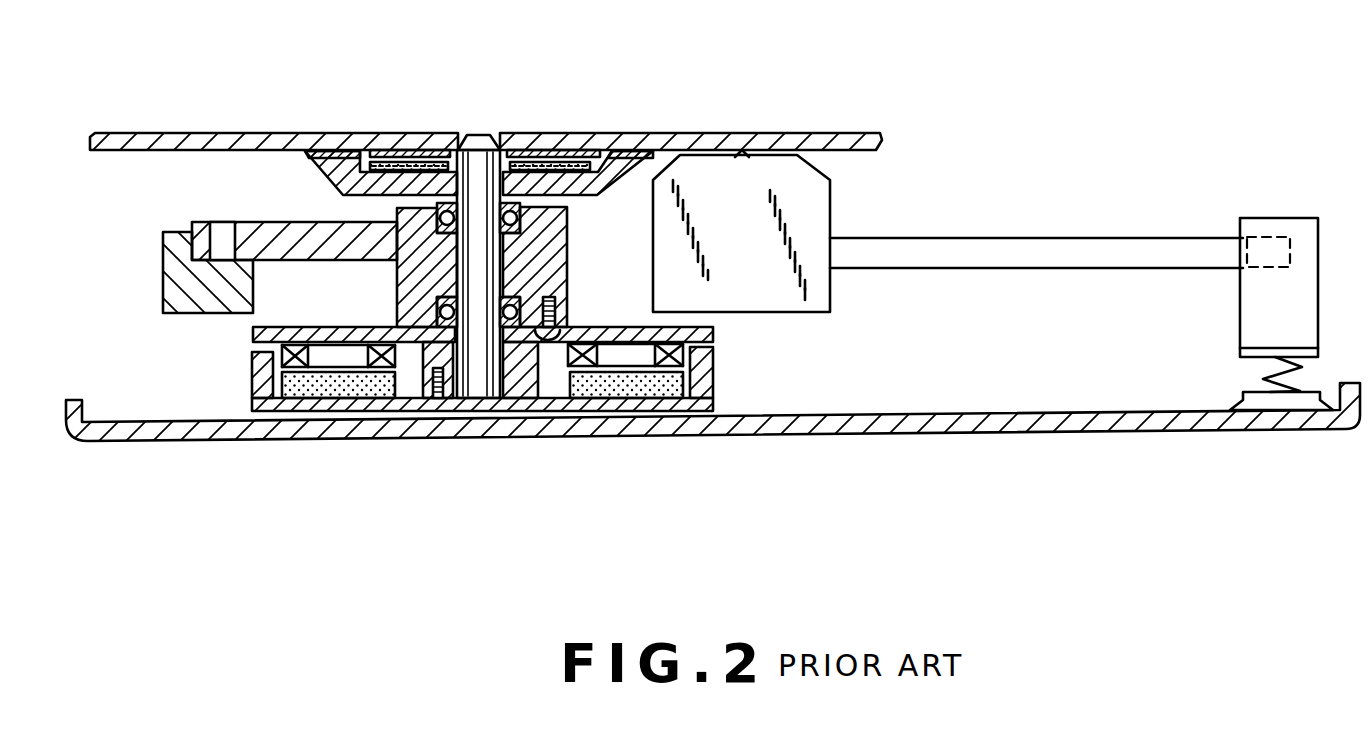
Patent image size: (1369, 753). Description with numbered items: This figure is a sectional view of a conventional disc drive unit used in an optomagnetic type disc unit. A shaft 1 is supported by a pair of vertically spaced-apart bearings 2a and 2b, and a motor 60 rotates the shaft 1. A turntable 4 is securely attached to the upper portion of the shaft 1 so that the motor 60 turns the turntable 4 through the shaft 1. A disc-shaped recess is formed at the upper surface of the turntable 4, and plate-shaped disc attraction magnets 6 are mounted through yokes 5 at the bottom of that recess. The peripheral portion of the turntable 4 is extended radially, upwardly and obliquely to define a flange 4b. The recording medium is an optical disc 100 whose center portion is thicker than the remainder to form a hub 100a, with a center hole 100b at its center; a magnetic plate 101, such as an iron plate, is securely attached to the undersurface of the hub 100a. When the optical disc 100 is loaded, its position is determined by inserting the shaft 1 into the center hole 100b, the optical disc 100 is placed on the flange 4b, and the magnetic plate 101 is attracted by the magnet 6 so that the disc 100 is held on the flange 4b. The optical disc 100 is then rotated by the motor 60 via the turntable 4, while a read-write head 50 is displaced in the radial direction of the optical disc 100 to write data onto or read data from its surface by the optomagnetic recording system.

The shaft 1 is at (482, 135).
The bearing 2a is at (522, 397).
The bearing 2b is at (437, 228).
The turntable 4 is at (317, 135).
The flange 4b is at (643, 135).
The yoke 5 is at (357, 135).
The disc attraction magnet 6 is at (393, 135).
The read-write head 50 is at (822, 215).
The motor 60 is at (572, 287).
The optical disc 100 is at (717, 135).
The hub 100a is at (602, 135).
The center hole 100b is at (462, 135).
The magnetic plate 101 is at (532, 135).